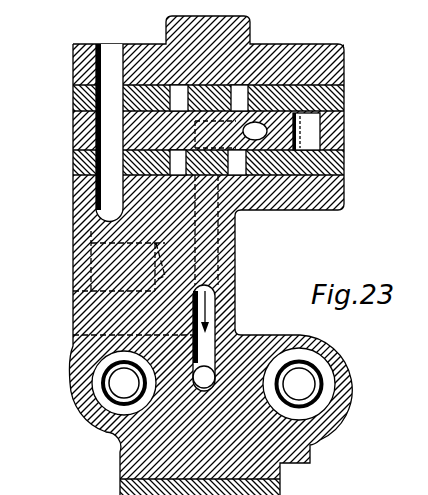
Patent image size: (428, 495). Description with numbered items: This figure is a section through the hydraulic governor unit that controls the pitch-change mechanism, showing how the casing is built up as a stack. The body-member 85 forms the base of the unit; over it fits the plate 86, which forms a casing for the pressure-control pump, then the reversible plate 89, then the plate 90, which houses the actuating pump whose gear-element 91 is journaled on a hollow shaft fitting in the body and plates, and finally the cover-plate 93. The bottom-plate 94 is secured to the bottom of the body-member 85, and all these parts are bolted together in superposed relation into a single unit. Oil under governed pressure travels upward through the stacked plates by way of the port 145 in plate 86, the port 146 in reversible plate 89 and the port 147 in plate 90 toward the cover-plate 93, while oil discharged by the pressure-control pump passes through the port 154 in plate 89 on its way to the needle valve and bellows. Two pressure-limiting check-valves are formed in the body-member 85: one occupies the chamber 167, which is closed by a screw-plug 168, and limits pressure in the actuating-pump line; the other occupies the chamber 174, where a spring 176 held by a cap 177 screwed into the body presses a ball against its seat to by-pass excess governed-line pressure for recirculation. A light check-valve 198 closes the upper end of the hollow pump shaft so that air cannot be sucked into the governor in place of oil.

The body-member 85 is at (272, 205).
The plate 86 is at (336, 157).
The reversible plate 89 is at (336, 128).
The plate 90 is at (336, 91).
The gear-element 91 is at (217, 73).
The cover-plate 93 is at (340, 62).
The bottom-plate 94 is at (272, 472).
The port 145 is at (113, 162).
The port 146 is at (312, 112).
The port 147 is at (113, 152).
The port 154 is at (207, 290).
The chamber 167 is at (328, 387).
The screw-plug 168 is at (300, 366).
The chamber 174 is at (98, 393).
The spring 176 is at (110, 395).
The cap 177 is at (89, 494).
The check-valve 198 is at (101, 37).